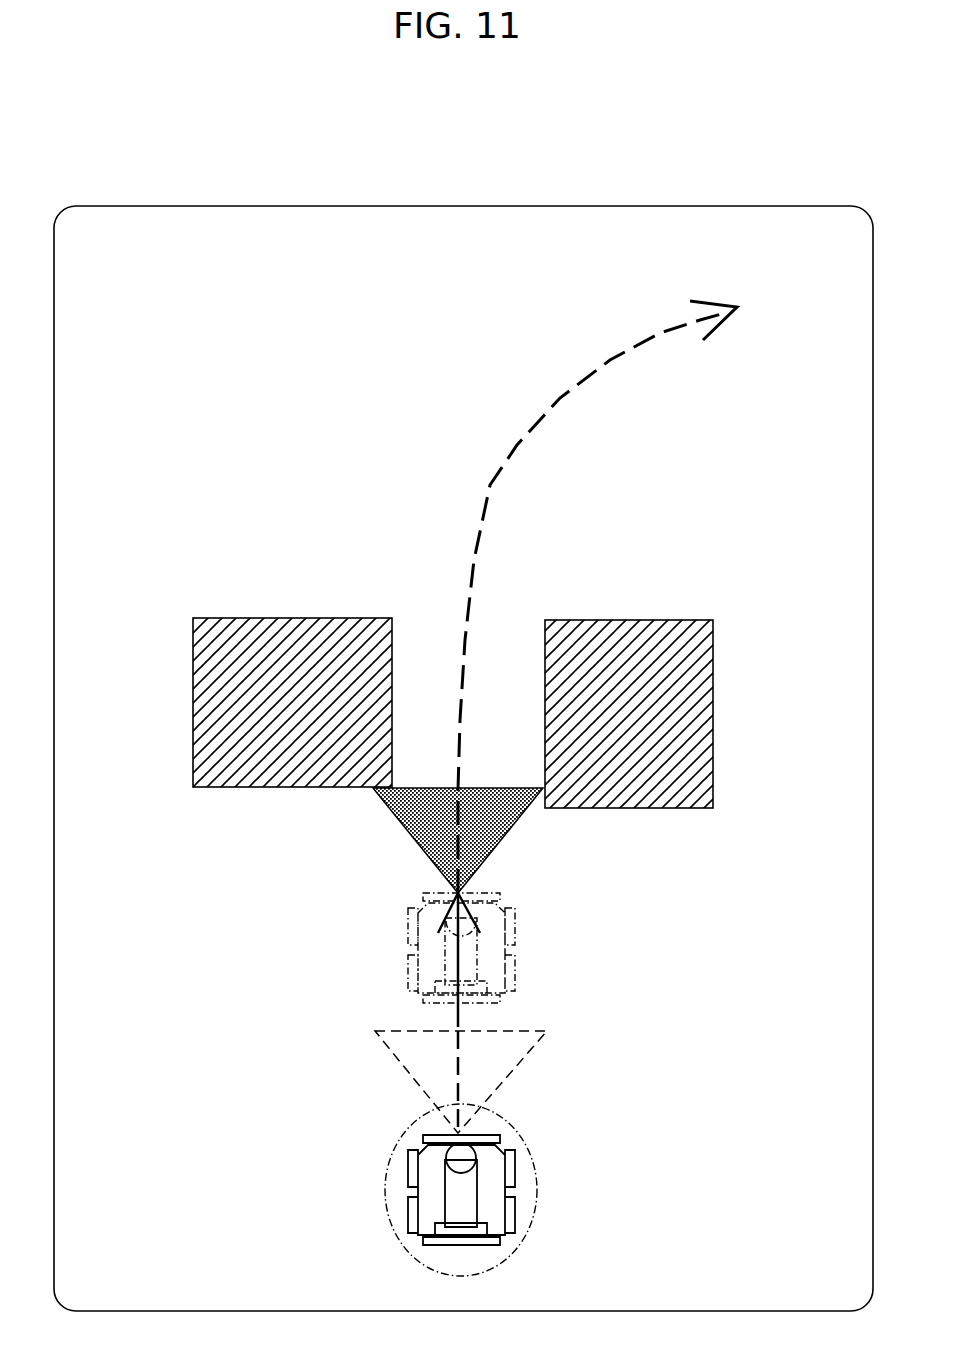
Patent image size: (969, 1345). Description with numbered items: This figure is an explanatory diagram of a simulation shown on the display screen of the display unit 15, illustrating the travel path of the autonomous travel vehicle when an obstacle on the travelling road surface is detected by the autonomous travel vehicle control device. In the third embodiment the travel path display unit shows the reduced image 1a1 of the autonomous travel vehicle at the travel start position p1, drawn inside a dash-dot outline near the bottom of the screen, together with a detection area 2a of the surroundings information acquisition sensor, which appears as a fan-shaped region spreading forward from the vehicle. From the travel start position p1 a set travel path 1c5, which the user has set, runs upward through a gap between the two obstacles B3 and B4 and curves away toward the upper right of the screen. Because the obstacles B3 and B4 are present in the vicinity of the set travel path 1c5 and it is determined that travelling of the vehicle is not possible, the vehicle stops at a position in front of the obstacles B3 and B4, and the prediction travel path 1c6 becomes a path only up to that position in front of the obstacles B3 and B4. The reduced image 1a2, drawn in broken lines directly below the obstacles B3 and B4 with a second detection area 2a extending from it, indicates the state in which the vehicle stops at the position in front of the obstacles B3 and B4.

The display unit 15 is at (432, 206).
The set travel path 1c5 is at (513, 453).
The obstacle B3 is at (286, 642).
The obstacle B4 is at (616, 648).
The detection area 2a is at (503, 842).
The prediction travel path 1c6 is at (458, 1022).
The reduced image 1a2 is at (493, 955).
The reduced image 1a1 is at (497, 1177).
The travel start position p1 is at (527, 1235).